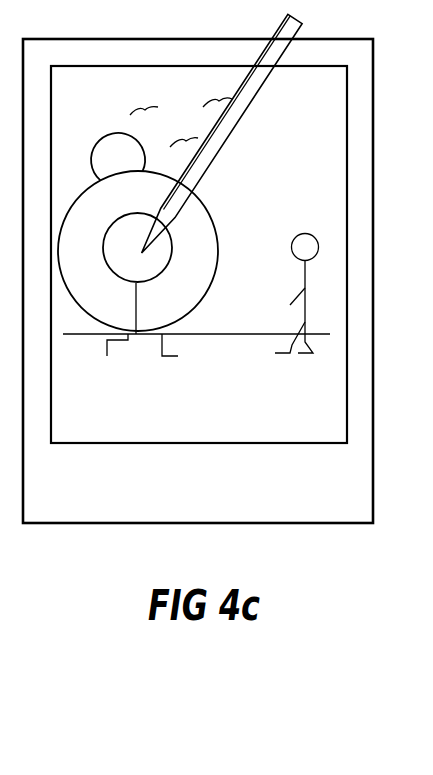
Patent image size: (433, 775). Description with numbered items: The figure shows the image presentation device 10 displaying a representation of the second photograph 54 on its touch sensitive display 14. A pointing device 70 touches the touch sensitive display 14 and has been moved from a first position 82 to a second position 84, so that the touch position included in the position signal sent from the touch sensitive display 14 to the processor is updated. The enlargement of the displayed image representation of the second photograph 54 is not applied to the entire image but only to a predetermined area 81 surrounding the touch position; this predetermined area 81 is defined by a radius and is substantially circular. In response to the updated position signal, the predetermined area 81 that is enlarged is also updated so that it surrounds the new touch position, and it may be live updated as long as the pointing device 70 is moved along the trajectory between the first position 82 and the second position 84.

The image presentation device 10 is at (328, 505).
The touch sensitive display 14 is at (114, 428).
The second photograph 54 is at (265, 413).
The pointing device 70 is at (307, 33).
The predetermined area 81 is at (183, 213).
The first position 82 is at (143, 250).
The second position 84 is at (141, 256).